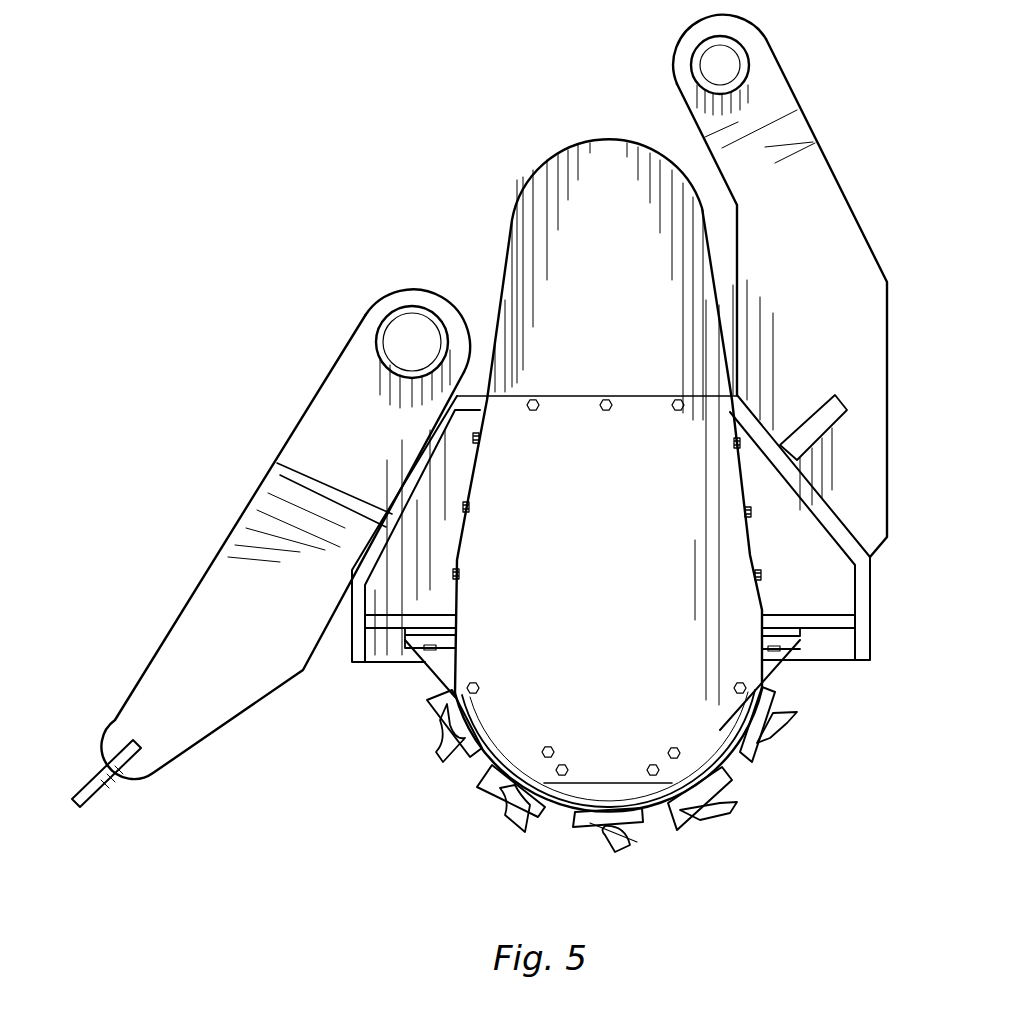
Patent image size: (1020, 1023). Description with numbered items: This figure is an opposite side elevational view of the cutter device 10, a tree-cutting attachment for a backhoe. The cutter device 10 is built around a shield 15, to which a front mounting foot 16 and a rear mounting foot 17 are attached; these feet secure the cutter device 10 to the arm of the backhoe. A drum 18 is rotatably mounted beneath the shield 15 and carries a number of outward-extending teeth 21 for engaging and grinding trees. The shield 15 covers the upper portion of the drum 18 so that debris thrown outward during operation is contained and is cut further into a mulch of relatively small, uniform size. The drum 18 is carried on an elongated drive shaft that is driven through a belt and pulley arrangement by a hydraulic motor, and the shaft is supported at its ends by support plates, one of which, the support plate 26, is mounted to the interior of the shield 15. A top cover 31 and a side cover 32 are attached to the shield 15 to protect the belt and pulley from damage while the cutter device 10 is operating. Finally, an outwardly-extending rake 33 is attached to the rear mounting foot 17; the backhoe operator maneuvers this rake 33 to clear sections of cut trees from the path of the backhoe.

The cutter device 10 is at (477, 193).
The shield 15 is at (870, 620).
The front mounting foot 16 is at (818, 240).
The rear mounting foot 17 is at (207, 625).
The drum 18 is at (727, 753).
The teeth 21 is at (447, 757).
The support plate 26 is at (437, 603).
The top cover 31 is at (606, 300).
The side cover 32 is at (624, 639).
The rake 33 is at (93, 791).